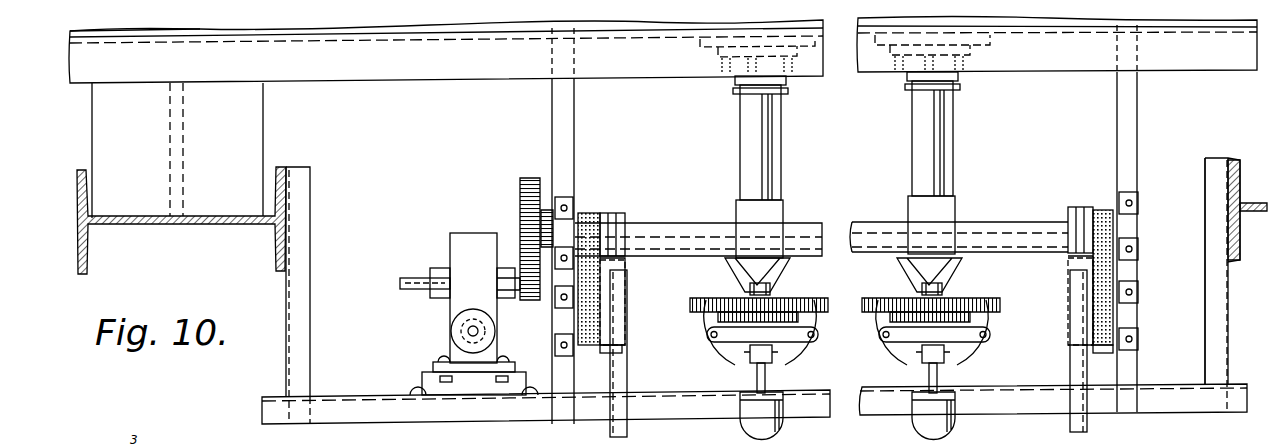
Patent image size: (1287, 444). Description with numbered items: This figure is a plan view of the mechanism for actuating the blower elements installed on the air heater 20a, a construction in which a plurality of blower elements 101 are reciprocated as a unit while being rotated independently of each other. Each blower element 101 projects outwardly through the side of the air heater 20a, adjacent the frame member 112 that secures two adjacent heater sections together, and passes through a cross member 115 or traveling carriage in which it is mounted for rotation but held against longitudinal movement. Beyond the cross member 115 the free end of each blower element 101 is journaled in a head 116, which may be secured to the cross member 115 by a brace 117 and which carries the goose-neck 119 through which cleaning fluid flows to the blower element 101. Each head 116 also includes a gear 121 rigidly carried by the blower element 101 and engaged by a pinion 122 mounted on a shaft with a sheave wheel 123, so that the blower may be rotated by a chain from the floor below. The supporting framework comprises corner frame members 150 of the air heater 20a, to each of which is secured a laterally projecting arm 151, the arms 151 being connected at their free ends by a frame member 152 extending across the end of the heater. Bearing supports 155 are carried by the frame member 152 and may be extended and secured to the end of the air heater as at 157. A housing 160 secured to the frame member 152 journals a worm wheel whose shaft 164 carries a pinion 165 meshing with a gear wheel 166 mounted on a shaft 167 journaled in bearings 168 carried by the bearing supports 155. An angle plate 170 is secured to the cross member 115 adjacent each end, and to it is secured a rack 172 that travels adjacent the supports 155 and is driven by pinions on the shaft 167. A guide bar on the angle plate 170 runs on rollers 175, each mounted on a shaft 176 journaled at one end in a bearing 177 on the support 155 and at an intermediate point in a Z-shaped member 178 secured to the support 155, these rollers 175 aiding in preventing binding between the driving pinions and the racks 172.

The air heater 20a is at (342, 30).
The frame member 112 is at (407, 62).
The bearing support extension 157 is at (565, 62).
The bearing support 155 is at (552, 135).
The shaft 167 is at (596, 180).
The bearing 168 is at (580, 225).
The gear wheel 166 is at (522, 190).
The cross member 115 is at (655, 238).
The blower element 101 is at (785, 148).
The shaft 164 is at (410, 277).
The pinion 165 is at (530, 300).
The housing 160 is at (473, 360).
The angle plate 170 is at (620, 282).
The Z-shaped member 178 is at (622, 292).
The roller 175 is at (627, 305).
The shaft 176 is at (627, 322).
The rack 172 is at (598, 348).
The bearing 177 is at (556, 345).
The gear 121 is at (695, 318).
The head 116 is at (755, 352).
The pinion 122 is at (732, 295).
The brace 117 is at (790, 266).
The sheave wheel 123 is at (818, 343).
The goose-neck 119 is at (783, 425).
The corner frame member 150 is at (175, 225).
The laterally projecting arm 151 is at (307, 313).
The frame member 152 is at (330, 397).